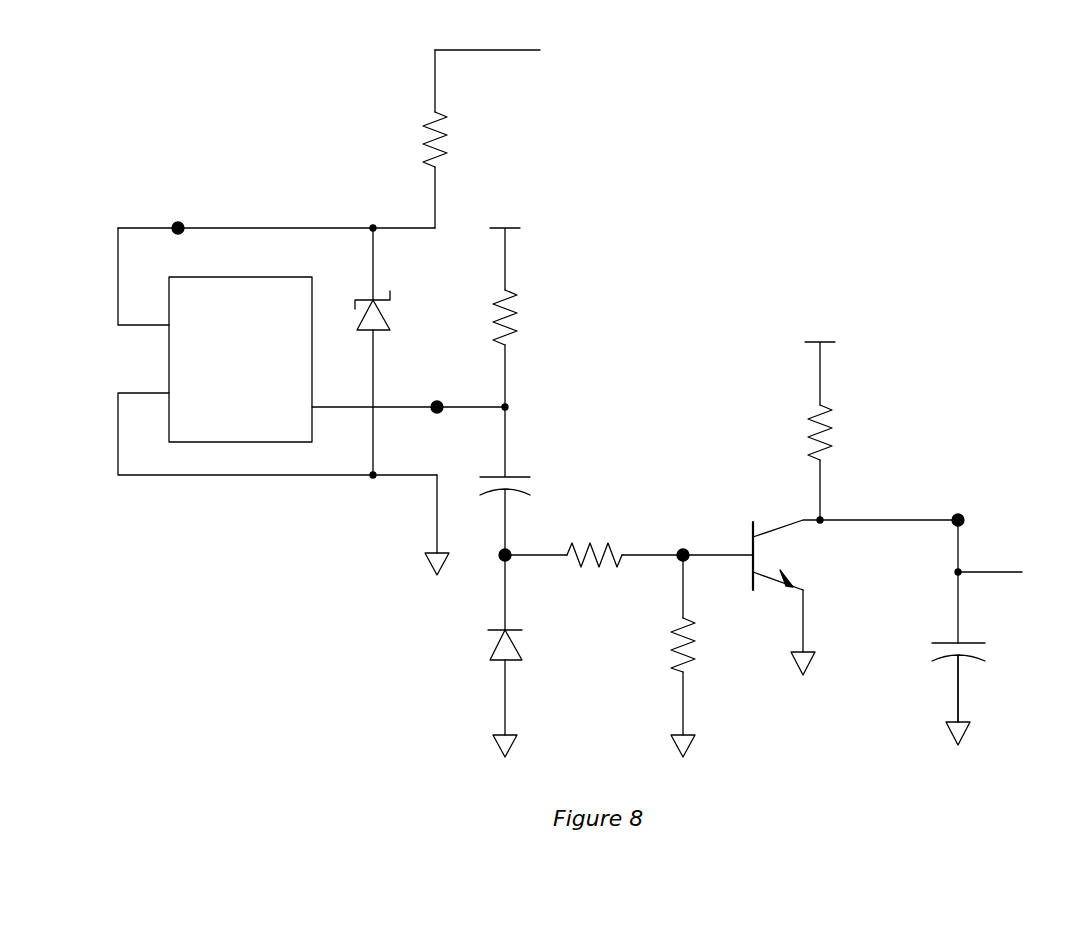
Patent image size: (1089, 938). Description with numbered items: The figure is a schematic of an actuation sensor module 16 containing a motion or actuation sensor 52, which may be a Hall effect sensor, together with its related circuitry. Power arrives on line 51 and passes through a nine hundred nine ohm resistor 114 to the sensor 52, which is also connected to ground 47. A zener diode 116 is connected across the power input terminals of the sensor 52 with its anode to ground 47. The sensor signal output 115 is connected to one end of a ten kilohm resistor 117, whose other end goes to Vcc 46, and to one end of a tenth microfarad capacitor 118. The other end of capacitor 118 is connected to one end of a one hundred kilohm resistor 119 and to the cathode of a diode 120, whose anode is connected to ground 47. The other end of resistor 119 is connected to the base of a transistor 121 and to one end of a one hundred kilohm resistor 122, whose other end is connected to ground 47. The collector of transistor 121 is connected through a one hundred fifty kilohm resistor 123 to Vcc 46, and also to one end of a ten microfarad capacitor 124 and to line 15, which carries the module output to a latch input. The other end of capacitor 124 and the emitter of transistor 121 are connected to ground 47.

The line 51 is at (505, 50).
The resistor 114 is at (427, 144).
The actuation sensor 52 is at (277, 277).
The zener diode 116 is at (384, 318).
The Vcc 46 is at (515, 228).
The resistor 117 is at (520, 314).
The sensor signal output 115 is at (397, 407).
The capacitor 118 is at (520, 477).
The ground 47 is at (430, 572).
The resistor 119 is at (600, 572).
The diode 120 is at (490, 650).
The resistor 122 is at (672, 656).
The transistor 121 is at (770, 546).
The resistor 123 is at (810, 433).
The line 15 is at (1000, 572).
The capacitor 124 is at (985, 651).
The actuation sensor module 16 is at (940, 166).